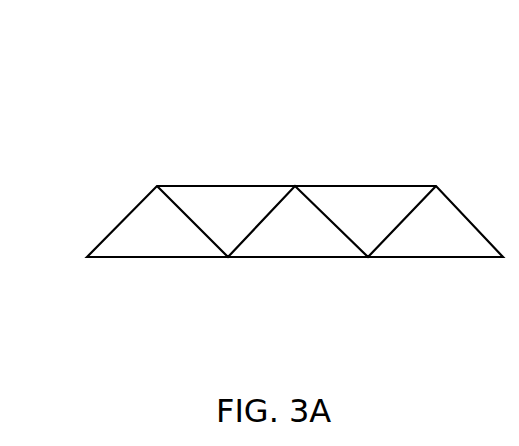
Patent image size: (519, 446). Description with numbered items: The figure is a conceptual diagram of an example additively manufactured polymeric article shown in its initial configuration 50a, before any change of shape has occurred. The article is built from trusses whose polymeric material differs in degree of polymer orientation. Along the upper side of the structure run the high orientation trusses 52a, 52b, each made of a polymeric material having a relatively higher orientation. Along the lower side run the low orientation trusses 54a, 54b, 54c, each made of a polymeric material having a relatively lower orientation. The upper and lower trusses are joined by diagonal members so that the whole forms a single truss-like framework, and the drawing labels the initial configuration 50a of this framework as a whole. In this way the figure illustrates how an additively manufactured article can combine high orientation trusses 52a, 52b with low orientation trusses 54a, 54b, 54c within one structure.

The initial configuration 50a is at (112, 63).
The high orientation truss 52a is at (235, 182).
The high orientation truss 52b is at (377, 182).
The low orientation truss 54a is at (104, 260).
The low orientation truss 54b is at (287, 260).
The low orientation truss 54c is at (437, 260).